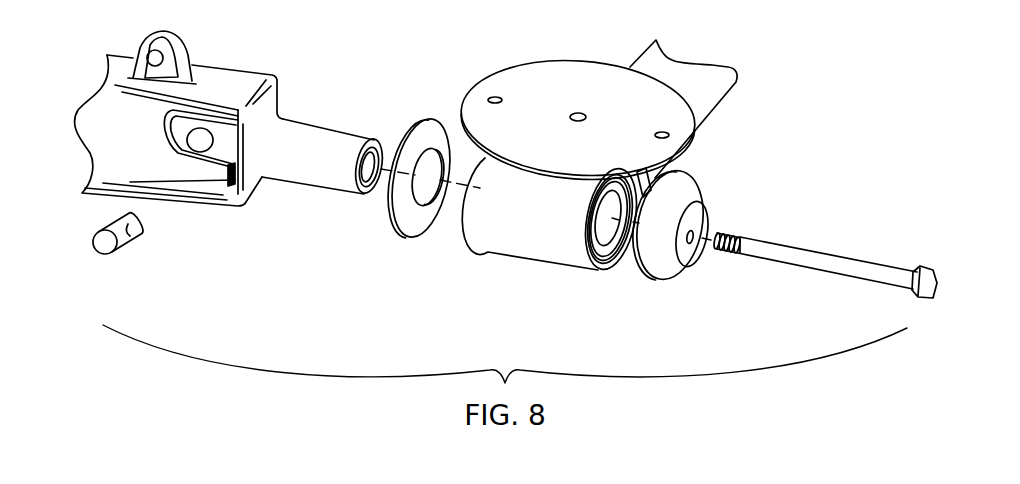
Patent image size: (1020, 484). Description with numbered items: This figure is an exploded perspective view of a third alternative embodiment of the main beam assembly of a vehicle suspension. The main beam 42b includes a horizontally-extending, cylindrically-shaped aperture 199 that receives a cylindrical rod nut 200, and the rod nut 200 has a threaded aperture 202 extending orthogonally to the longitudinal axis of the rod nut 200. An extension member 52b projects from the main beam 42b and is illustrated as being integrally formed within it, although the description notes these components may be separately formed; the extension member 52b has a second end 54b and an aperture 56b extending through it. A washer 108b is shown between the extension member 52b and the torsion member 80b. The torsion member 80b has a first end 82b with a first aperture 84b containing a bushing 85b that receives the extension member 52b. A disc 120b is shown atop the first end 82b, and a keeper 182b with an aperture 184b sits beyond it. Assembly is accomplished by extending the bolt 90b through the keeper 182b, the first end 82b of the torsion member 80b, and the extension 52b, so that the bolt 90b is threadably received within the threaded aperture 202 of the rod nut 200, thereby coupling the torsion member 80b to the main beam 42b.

The main beam 42b is at (230, 78).
The aperture 199 is at (203, 146).
The rod nut 200 is at (113, 223).
The threaded aperture 202 is at (138, 235).
The extension member 52b is at (293, 128).
The second end 54b is at (348, 130).
The aperture 56b is at (370, 190).
The washer 108b is at (415, 223).
The first end 82b is at (515, 232).
The bushing 85b is at (597, 268).
The first aperture 84b is at (617, 250).
The disc 120b is at (540, 72).
The torsion member 80b is at (642, 55).
The keeper 182b is at (692, 188).
The aperture in cap 184b is at (695, 238).
The bolt 90b is at (848, 255).